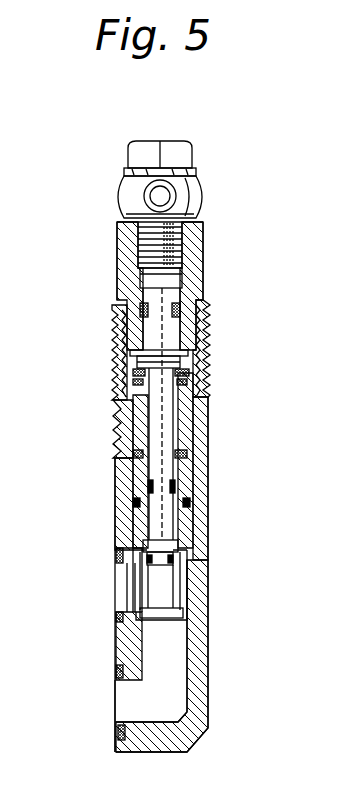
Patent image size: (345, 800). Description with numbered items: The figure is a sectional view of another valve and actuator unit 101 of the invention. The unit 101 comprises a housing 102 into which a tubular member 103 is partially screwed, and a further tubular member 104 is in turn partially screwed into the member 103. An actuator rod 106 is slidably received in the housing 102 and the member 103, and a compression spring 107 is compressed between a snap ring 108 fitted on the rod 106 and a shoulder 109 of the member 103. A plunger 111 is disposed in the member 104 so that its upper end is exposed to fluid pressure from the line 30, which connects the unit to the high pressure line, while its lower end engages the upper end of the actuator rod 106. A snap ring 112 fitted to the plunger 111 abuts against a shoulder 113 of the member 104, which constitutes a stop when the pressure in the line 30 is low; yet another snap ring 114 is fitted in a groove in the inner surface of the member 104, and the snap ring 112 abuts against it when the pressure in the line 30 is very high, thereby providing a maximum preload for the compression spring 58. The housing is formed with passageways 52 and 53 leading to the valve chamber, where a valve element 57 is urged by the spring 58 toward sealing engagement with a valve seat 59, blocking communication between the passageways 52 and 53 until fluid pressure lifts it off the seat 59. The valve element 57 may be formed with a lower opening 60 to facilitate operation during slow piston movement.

The line 30 is at (200, 190).
The unit 101 is at (252, 431).
The housing 102 is at (200, 706).
The tubular member 103 is at (212, 346).
The tubular member 104 is at (205, 252).
The actuator rod 106 is at (182, 525).
The compression spring 107 is at (208, 440).
The snap ring 108 is at (195, 377).
The shoulder 109 is at (117, 458).
The plunger 111 is at (160, 297).
The snap ring 112 is at (125, 362).
The shoulder 113 is at (115, 325).
The snap ring 114 is at (118, 430).
The passageway 52 is at (123, 592).
The passageway 53 is at (130, 648).
The valve element 57 is at (187, 572).
The compression spring 58 is at (190, 556).
The valve seat 59 is at (190, 607).
The lower opening 60 is at (162, 620).